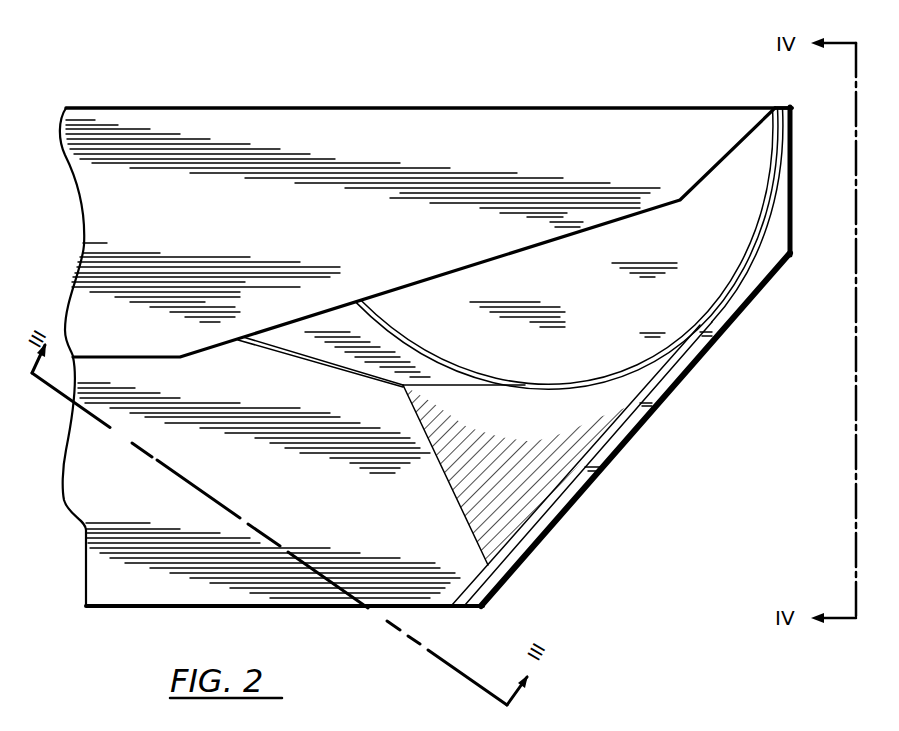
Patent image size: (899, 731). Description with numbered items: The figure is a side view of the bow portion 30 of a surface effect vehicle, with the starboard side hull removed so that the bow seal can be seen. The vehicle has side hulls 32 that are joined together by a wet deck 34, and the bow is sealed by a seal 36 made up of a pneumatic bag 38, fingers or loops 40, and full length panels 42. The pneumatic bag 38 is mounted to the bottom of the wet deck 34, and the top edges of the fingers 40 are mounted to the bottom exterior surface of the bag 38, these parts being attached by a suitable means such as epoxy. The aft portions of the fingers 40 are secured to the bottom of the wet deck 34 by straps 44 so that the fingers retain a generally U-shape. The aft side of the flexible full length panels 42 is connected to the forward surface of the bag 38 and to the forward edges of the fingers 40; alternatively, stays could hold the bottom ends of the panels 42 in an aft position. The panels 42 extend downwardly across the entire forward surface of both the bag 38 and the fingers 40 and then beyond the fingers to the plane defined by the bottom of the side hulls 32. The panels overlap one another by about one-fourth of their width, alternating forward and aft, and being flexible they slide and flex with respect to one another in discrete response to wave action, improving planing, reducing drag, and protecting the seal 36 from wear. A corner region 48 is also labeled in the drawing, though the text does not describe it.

The bow portion 30 is at (481, 88).
The side hulls 32 is at (80, 450).
The wet deck 34 is at (78, 186).
The seal 36 is at (682, 430).
The pneumatic bag 38 is at (722, 278).
The fingers 40 is at (553, 478).
The full length panels 42 is at (783, 188).
The straps 44 is at (298, 358).
The corner 48 is at (781, 108).